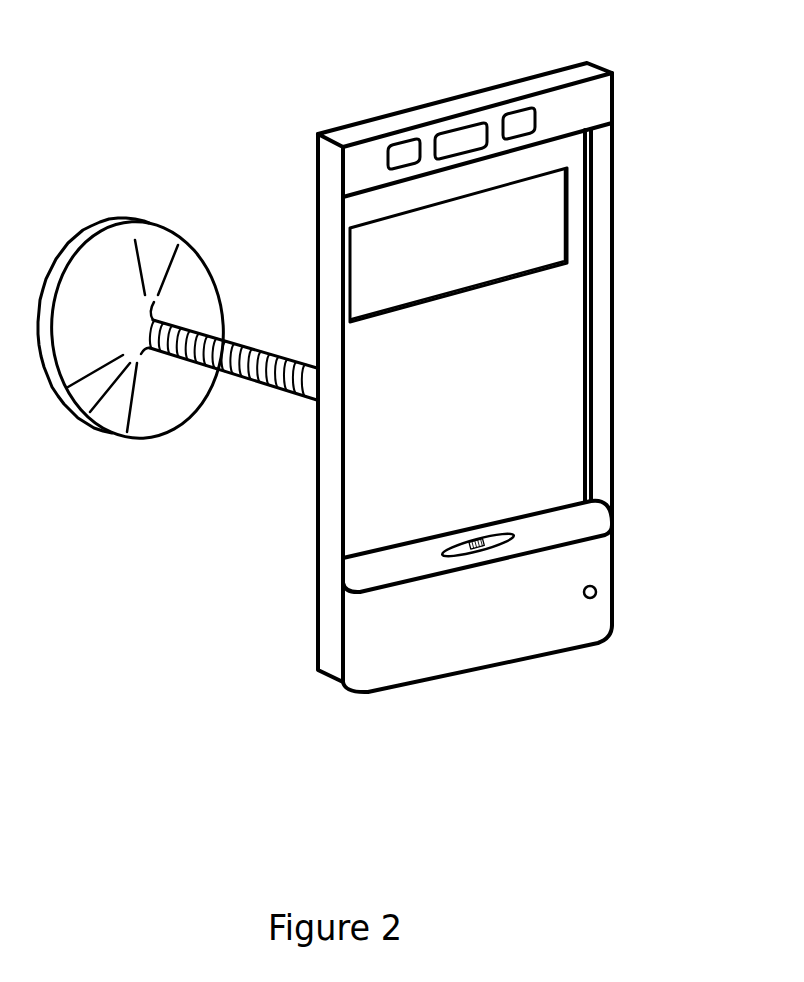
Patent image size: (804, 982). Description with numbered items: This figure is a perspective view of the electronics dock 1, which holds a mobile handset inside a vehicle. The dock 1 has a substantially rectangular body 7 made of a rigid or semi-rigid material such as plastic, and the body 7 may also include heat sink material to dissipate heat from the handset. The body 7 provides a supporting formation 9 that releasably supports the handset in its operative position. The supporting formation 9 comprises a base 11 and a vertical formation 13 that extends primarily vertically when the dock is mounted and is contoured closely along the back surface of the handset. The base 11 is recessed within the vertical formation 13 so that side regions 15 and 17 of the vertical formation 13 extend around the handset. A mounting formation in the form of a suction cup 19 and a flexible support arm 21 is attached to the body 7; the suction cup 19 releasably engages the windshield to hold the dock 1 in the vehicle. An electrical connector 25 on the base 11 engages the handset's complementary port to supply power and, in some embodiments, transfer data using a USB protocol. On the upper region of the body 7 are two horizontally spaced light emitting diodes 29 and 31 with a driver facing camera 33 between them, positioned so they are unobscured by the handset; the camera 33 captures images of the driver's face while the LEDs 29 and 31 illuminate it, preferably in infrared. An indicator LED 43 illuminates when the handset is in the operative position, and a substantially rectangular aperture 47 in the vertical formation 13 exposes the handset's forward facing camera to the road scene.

The dock 1 is at (377, 48).
The body 7 is at (603, 87).
The supporting formation 9 is at (620, 480).
The base 11 is at (352, 635).
The vertical formation 13 is at (567, 365).
The side region 15 is at (615, 285).
The side region 17 is at (327, 503).
The suction cup 19 is at (238, 343).
The flexible support arm 21 is at (155, 240).
The electrical connector 25 is at (477, 542).
The light emitting diode 29 is at (400, 152).
The light emitting diode 31 is at (517, 123).
The driver facing camera 33 is at (463, 138).
The indicator LED 43 is at (597, 587).
The aperture 47 is at (552, 227).